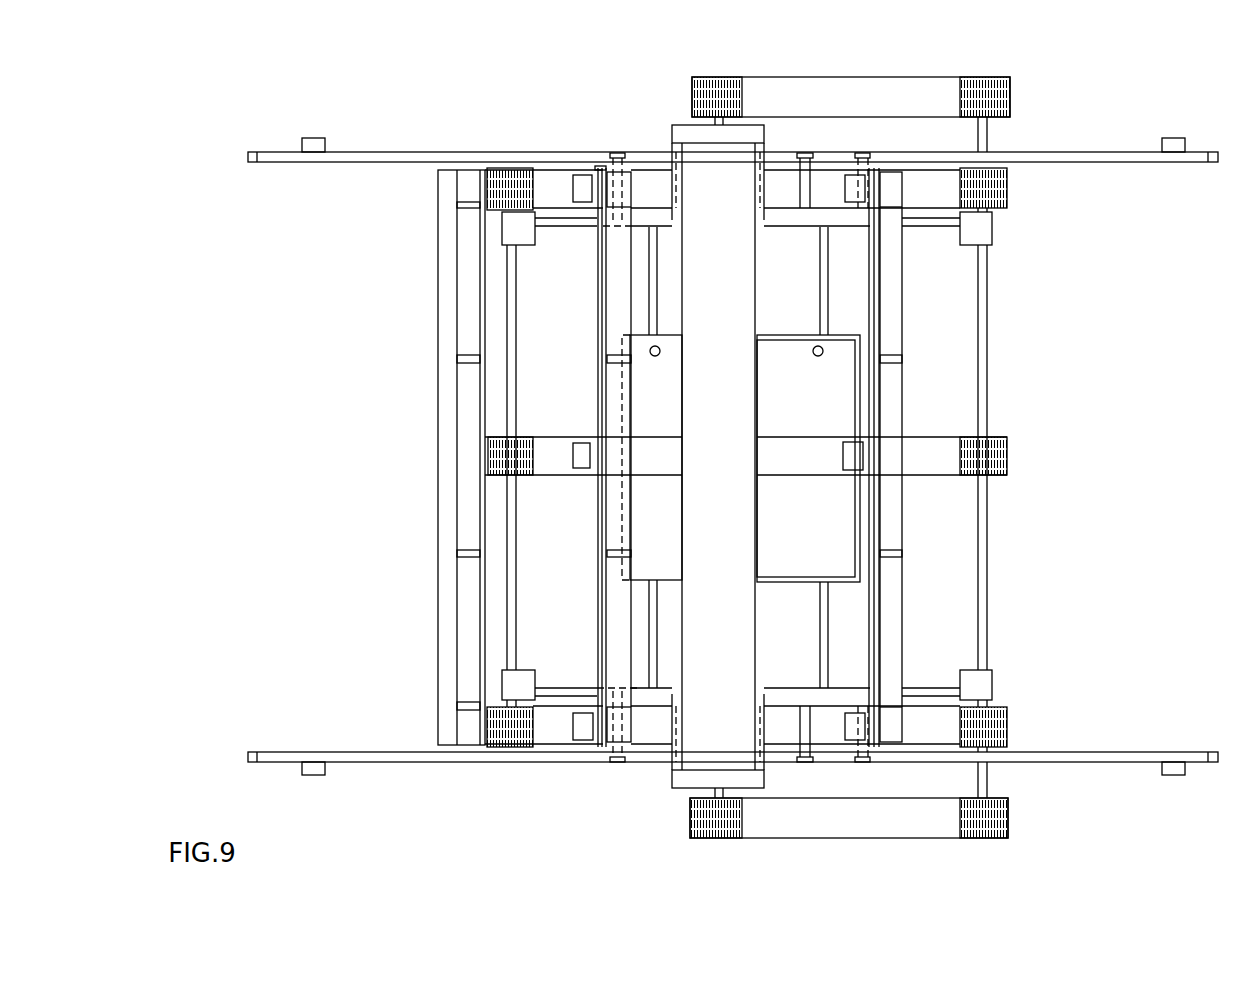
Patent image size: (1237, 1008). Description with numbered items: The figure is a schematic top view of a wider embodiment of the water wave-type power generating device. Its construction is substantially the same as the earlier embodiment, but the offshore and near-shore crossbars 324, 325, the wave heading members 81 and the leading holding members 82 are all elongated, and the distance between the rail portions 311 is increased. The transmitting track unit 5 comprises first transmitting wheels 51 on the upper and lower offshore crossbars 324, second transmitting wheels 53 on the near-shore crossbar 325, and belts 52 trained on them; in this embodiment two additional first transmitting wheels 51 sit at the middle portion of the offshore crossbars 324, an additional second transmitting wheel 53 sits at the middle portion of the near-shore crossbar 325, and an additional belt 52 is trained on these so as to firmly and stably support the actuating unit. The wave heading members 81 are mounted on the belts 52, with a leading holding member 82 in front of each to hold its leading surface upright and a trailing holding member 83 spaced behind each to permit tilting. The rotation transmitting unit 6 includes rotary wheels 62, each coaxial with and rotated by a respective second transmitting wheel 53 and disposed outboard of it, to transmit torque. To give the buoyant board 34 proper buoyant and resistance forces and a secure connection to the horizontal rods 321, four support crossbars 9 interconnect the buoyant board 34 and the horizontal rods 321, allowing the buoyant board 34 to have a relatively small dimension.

The transmitting track unit 5 is at (473, 456).
The rotation transmitting unit 6 is at (895, 446).
The support crossbar 9 is at (655, 297).
The buoyant board 34 is at (833, 497).
The first transmitting wheel 51 is at (503, 185).
The belt 52 is at (553, 450).
The second transmitting wheel 53 is at (997, 183).
The rotary wheel 62 is at (997, 100).
The wave heading member 81 is at (602, 595).
The leading holding member 82 is at (622, 658).
The trailing holding member 83 is at (855, 192).
The rail portion 311 is at (1112, 158).
The horizontal rod 321 is at (560, 220).
The offshore crossbar 324 is at (512, 594).
The near-shore crossbar 325 is at (983, 563).